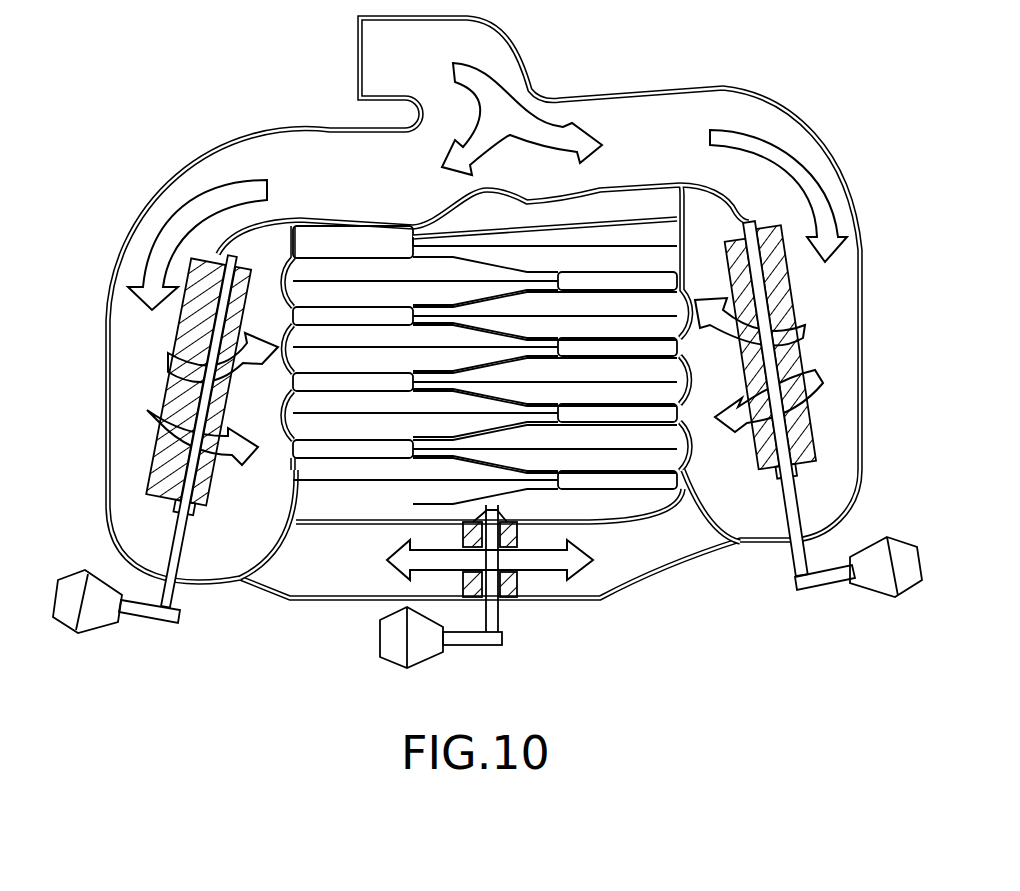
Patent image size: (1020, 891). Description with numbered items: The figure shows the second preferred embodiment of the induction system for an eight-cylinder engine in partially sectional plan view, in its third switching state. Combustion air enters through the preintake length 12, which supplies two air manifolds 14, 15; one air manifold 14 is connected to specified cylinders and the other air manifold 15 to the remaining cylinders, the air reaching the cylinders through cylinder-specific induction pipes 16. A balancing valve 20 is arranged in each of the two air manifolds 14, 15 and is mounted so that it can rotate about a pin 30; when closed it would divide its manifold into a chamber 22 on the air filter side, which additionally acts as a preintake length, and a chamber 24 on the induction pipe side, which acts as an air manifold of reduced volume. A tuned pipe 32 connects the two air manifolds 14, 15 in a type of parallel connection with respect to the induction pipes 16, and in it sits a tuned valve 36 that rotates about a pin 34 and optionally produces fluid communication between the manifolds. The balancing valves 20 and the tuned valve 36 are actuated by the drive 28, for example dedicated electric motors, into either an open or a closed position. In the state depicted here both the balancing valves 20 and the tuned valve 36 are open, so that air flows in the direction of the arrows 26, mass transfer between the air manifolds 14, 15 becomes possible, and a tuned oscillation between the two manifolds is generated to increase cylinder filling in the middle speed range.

The preintake length 12 is at (305, 170).
The air manifold 14 is at (163, 387).
The air manifold 15 is at (710, 372).
The induction pipes 16 is at (403, 413).
The balancing valve 20 is at (163, 487).
The chamber 22 is at (155, 457).
The chamber 24 is at (258, 537).
The arrows 26 is at (497, 103).
The drive 28 is at (93, 623).
The pin 30 is at (167, 558).
The tuned pipe 32 is at (352, 577).
The pin 34 is at (497, 623).
The tuned valve 36 is at (510, 600).